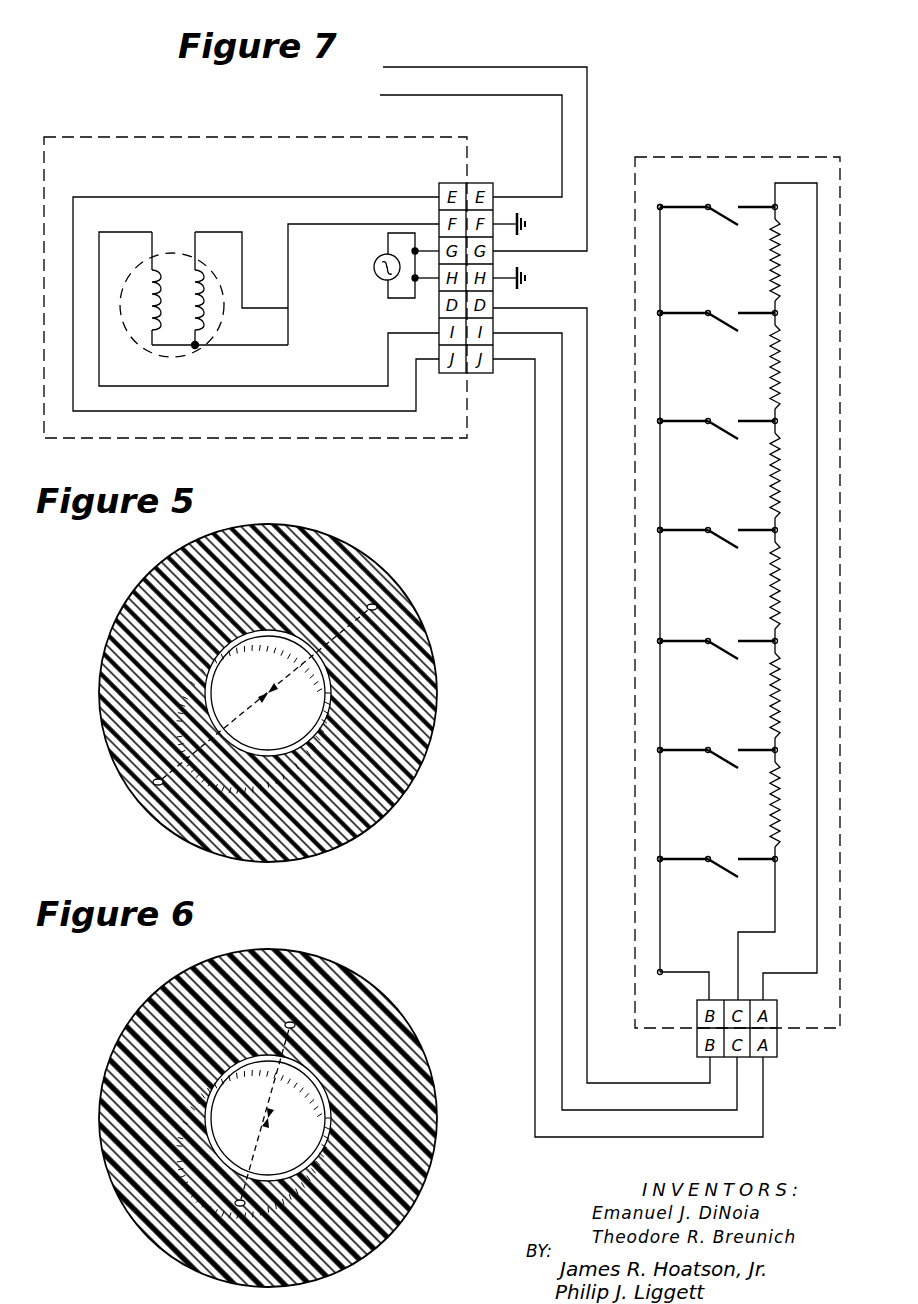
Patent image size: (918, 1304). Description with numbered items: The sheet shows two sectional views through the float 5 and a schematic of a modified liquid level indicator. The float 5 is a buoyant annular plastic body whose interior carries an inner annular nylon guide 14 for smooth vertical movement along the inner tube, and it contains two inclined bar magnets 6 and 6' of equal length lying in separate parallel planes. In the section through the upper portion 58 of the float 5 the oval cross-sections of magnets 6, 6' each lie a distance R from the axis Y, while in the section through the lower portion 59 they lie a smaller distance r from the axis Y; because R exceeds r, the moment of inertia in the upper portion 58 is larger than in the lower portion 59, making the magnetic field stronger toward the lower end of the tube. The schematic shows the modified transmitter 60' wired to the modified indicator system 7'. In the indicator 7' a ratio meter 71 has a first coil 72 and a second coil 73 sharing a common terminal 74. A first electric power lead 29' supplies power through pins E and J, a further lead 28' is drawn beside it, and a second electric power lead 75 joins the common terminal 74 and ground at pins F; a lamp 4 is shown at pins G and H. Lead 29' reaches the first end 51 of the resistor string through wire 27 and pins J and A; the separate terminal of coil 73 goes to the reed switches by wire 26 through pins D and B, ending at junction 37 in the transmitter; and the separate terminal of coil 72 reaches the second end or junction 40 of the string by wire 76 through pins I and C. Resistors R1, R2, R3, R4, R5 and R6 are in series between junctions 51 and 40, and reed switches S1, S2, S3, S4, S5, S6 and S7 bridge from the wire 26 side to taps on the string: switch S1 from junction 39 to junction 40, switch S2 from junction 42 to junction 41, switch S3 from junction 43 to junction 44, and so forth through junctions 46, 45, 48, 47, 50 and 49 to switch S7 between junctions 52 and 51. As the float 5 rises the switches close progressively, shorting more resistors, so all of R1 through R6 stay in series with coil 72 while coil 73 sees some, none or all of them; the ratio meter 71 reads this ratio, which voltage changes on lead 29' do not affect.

In FIG. 5, the float 5 is at (394, 823).
In FIG. 6, the float 5 is at (108, 1030).
In FIG. 5, the bar magnet 6 is at (398, 585).
In FIG. 6, the bar magnet 6 is at (306, 1005).
In FIG. 5, the bar magnet 6' is at (114, 767).
In FIG. 6, the bar magnet 6' is at (222, 1221).
In FIG. 5, the inner annular nylon guide 14 is at (300, 756).
In FIG. 6, the inner annular nylon guide 14 is at (212, 1080).
In FIG. 5, the upper portion of float 58 is at (106, 644).
In FIG. 6, the lower portion of float 59 is at (130, 1215).
In FIG. 5, the distance of magnet cross-sections from axis in upper portion R is at (265, 694).
In FIG. 6, the distance of magnet cross-sections from axis in lower portion r is at (265, 1114).
In FIG. 5, the axis Y is at (242, 677).
In FIG. 6, the axis Y is at (287, 1135).
In FIG. 7, the indicator system 7' is at (255, 269).
In FIG. 7, the supply lead 28' is at (485, 143).
In FIG. 7, the first electric power lead 29' is at (317, 266).
In FIG. 7, the wire 76 is at (112, 232).
In FIG. 7, the connecting wire 26 is at (222, 232).
In FIG. 7, the first coil 72 is at (150, 280).
In FIG. 7, the second coil 73 is at (202, 313).
In FIG. 7, the common terminal 74 is at (168, 348).
In FIG. 7, the ratio meter 71 is at (203, 352).
In FIG. 7, the second electric power lead 75 is at (288, 291).
In FIG. 7, the lamp 4 is at (375, 260).
In FIG. 7, the connecting wire 27 is at (510, 359).
In FIG. 7, the transmitter 60' is at (737, 571).
In FIG. 7, the common terminal 37 is at (658, 970).
In FIG. 7, the junction 39 is at (658, 857).
In FIG. 7, the junction 40 is at (774, 856).
In FIG. 7, the junction 41 is at (774, 747).
In FIG. 7, the junction 42 is at (658, 748).
In FIG. 7, the junction 43 is at (658, 639).
In FIG. 7, the junction 44 is at (774, 638).
In FIG. 7, the resistor R4 terminal 45 is at (774, 527).
In FIG. 7, the switch S4 terminal 46 is at (658, 528).
In FIG. 7, the resistor R5 terminal 47 is at (774, 418).
In FIG. 7, the switch S5 terminal 48 is at (658, 419).
In FIG. 7, the resistor R6 terminal 49 is at (774, 310).
In FIG. 7, the switch S6 terminal 50 is at (658, 311).
In FIG. 7, the junction 51 is at (774, 204).
In FIG. 7, the junction 52 is at (658, 205).
In FIG. 7, the reed switch S1 is at (717, 877).
In FIG. 7, the reed switch S2 is at (717, 768).
In FIG. 7, the reed switch S3 is at (717, 659).
In FIG. 7, the reed switch S4 is at (717, 548).
In FIG. 7, the reed switch S5 is at (717, 439).
In FIG. 7, the reed switch S6 is at (717, 331).
In FIG. 7, the reed switch S7 is at (717, 225).
In FIG. 7, the resistor R1 is at (770, 810).
In FIG. 7, the resistor R2 is at (770, 701).
In FIG. 7, the resistor R3 is at (770, 590).
In FIG. 7, the resistor R4 is at (770, 481).
In FIG. 7, the resistor R5 is at (770, 373).
In FIG. 7, the resistor R6 is at (770, 267).